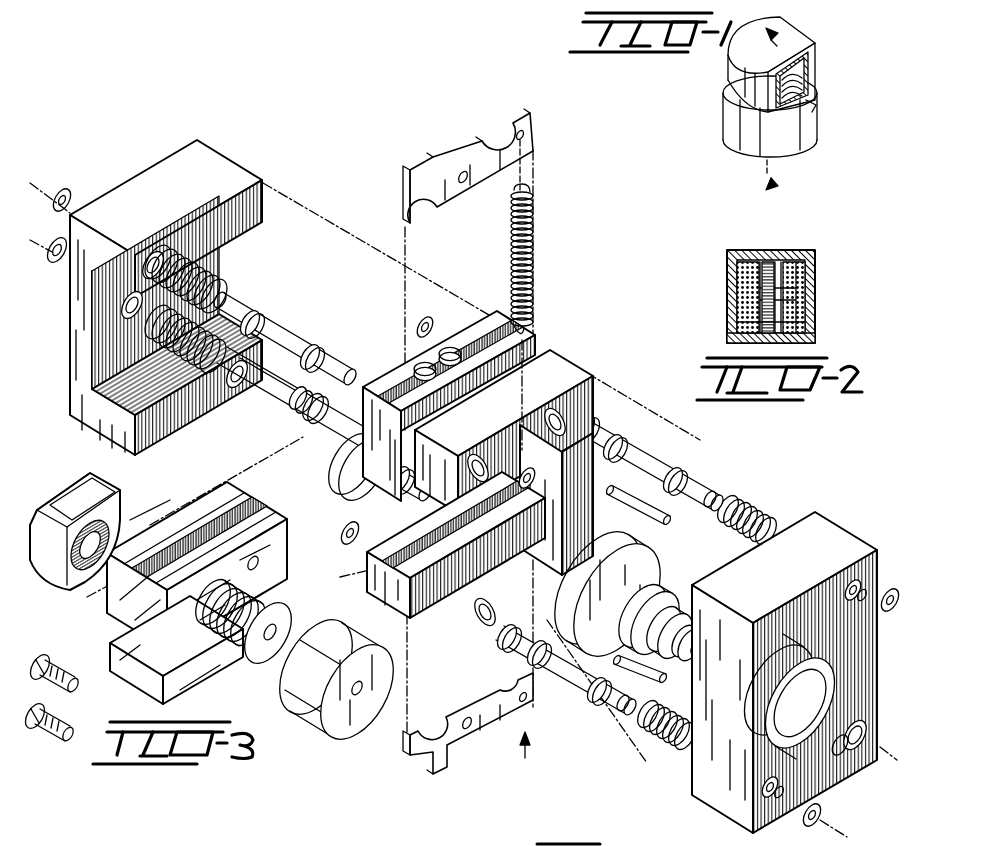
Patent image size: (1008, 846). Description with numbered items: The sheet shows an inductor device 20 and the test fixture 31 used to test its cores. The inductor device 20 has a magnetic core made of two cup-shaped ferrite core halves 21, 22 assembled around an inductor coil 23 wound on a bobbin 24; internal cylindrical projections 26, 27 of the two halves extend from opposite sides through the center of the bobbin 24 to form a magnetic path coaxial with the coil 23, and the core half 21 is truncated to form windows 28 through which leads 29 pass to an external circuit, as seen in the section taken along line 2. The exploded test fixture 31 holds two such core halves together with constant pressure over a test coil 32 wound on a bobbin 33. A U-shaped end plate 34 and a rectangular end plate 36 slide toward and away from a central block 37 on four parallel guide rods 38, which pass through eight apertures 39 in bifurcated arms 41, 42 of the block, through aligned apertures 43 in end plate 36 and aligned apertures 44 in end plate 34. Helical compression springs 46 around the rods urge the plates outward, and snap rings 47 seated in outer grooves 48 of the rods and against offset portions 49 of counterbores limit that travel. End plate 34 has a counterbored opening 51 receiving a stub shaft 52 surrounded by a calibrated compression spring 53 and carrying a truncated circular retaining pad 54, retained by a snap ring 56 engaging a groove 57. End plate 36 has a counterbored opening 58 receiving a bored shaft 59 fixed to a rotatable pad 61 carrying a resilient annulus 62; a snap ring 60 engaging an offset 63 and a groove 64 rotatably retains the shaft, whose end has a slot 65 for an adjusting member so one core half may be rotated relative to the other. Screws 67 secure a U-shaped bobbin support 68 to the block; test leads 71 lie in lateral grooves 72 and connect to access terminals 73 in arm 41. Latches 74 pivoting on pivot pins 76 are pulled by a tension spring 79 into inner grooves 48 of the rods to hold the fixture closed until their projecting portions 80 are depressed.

In FIG. 1, the section line 2 is at (780, 116).
In FIG. 1, the inductor device 20 is at (769, 106).
In FIG. 2, the inductor device 20 is at (788, 289).
In FIG. 1, the cup-shaped ferrite core half 21 is at (752, 48).
In FIG. 2, the cup-shaped ferrite core half 21 is at (812, 262).
In FIG. 3, the cup-shaped ferrite core half 21 is at (70, 530).
In FIG. 1, the cup-shaped ferrite core half 22 is at (805, 128).
In FIG. 2, the cup-shaped ferrite core half 22 is at (815, 336).
In FIG. 3, the cup-shaped ferrite core half 22 is at (343, 724).
In FIG. 1, the inductor coil 23 is at (803, 82).
In FIG. 2, the inductor coil 23 is at (738, 286).
In FIG. 2, the bobbin 24 is at (790, 261).
In FIG. 2, the internal cylindrical projection 26 is at (760, 261).
In FIG. 3, the internal cylindrical projection 26 is at (80, 578).
In FIG. 2, the internal cylindrical projection 27 is at (748, 336).
In FIG. 1, the window 28 is at (806, 66).
In FIG. 3, the window 28 is at (90, 483).
In FIG. 1, the lead 29 is at (814, 108).
In FIG. 3, the test fixture 31 is at (529, 758).
In FIG. 3, the test coil 32 is at (240, 648).
In FIG. 3, the bobbin 33 is at (287, 593).
In FIG. 3, the U-shaped end plate 34 is at (155, 293).
In FIG. 3, the rectangular end plate 36 is at (794, 671).
In FIG. 3, the central block 37 is at (560, 367).
In FIG. 3, the guide rod 38 is at (293, 338).
In FIG. 3, the aperture 39 is at (568, 408).
In FIG. 3, the bifurcated arm 41 is at (449, 406).
In FIG. 3, the bifurcated arm 42 is at (456, 571).
In FIG. 3, the aperture 43 is at (852, 572).
In FIG. 3, the aperture 44 is at (152, 252).
In FIG. 3, the helical compression spring 46 is at (217, 277).
In FIG. 3, the snap ring 47 is at (66, 190).
In FIG. 3, the groove 48 is at (245, 310).
In FIG. 3, the offset portion 49 is at (863, 590).
In FIG. 3, the counterbored opening 51 is at (125, 310).
In FIG. 3, the stub shaft 52 is at (340, 425).
In FIG. 3, the compression spring 53 is at (190, 362).
In FIG. 3, the retaining pad 54 is at (353, 497).
In FIG. 3, the snap ring 56 is at (55, 262).
In FIG. 3, the groove 57 is at (302, 420).
In FIG. 3, the counterbored opening 58 is at (790, 683).
In FIG. 3, the bored shaft 59 is at (668, 583).
In FIG. 3, the snap ring 60 is at (858, 750).
In FIG. 3, the rotatable pad 61 is at (645, 565).
In FIG. 3, the resilient annulus 62 is at (610, 548).
In FIG. 3, the offset 63 is at (825, 770).
In FIG. 3, the groove 64 is at (684, 596).
In FIG. 3, the slot 65 is at (690, 655).
In FIG. 3, the screw 67 is at (48, 695).
In FIG. 3, the U-shaped bobbin support 68 is at (143, 672).
In FIG. 3, the test lead 71 is at (197, 507).
In FIG. 3, the lateral groove 72 is at (200, 561).
In FIG. 3, the access terminal 73 is at (452, 345).
In FIG. 3, the latch 74 is at (466, 451).
In FIG. 3, the pivot pin 76 is at (618, 496).
In FIG. 3, the tension spring 79 is at (535, 275).
In FIG. 3, the projecting portion 80 is at (433, 773).